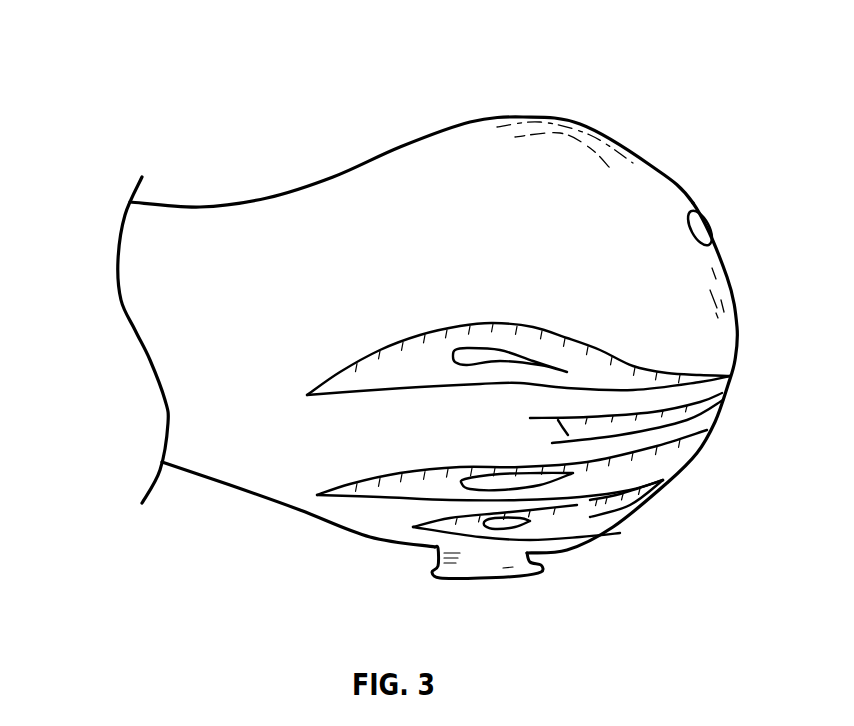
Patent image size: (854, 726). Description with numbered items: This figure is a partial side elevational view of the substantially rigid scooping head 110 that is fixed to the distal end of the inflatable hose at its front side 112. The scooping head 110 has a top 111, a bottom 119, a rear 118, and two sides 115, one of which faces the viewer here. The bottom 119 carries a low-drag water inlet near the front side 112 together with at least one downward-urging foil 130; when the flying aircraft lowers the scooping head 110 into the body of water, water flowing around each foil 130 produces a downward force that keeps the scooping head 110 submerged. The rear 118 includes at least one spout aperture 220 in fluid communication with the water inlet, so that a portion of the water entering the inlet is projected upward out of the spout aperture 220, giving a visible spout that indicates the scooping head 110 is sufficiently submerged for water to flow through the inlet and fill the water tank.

The scooping head 110 is at (638, 56).
The top 111 is at (442, 131).
The front side 112 is at (128, 210).
The sides 115 is at (468, 275).
The rear 118 is at (732, 278).
The bottom 119 is at (370, 537).
The downward-urging foil 130 is at (533, 490).
The spout aperture 220 is at (690, 220).